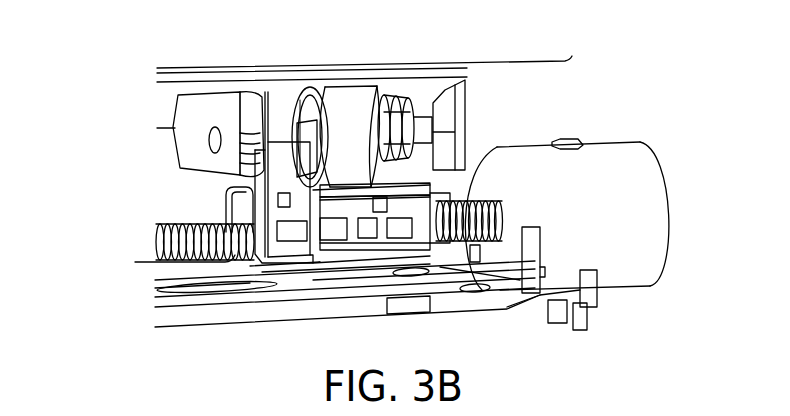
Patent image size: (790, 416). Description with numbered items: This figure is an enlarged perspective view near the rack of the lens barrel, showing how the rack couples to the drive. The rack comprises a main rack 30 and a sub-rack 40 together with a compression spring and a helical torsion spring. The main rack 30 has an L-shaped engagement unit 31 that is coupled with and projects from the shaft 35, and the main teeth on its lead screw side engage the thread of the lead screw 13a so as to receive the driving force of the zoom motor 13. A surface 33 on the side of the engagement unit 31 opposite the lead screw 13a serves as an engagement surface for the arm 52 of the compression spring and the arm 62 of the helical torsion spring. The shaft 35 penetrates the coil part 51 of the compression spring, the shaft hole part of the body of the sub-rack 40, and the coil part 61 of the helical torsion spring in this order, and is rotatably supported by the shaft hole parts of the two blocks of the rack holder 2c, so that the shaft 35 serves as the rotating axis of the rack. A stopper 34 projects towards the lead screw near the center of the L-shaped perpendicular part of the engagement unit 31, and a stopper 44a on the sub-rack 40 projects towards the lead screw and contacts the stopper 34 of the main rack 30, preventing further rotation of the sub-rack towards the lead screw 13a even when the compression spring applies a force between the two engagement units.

The rack holder 2c is at (225, 113).
The coil part 51 is at (307, 100).
The sub-rack 40 is at (345, 103).
The coil part 61 is at (402, 103).
The shaft 35 is at (467, 207).
The zoom motor 13 is at (627, 203).
The stopper 44a is at (233, 212).
The lead screw 13a is at (157, 237).
The stopper 34 is at (135, 262).
The main rack 30 is at (312, 238).
The surface 33 is at (323, 243).
The arm 52 is at (318, 200).
The engagement unit 31 is at (415, 228).
The arm 62 is at (480, 268).